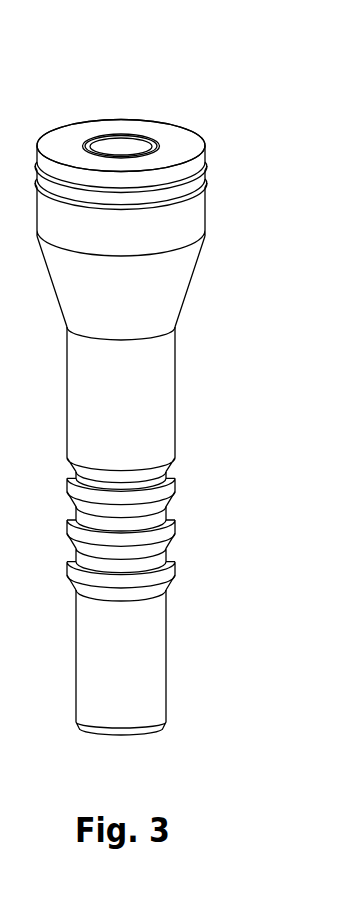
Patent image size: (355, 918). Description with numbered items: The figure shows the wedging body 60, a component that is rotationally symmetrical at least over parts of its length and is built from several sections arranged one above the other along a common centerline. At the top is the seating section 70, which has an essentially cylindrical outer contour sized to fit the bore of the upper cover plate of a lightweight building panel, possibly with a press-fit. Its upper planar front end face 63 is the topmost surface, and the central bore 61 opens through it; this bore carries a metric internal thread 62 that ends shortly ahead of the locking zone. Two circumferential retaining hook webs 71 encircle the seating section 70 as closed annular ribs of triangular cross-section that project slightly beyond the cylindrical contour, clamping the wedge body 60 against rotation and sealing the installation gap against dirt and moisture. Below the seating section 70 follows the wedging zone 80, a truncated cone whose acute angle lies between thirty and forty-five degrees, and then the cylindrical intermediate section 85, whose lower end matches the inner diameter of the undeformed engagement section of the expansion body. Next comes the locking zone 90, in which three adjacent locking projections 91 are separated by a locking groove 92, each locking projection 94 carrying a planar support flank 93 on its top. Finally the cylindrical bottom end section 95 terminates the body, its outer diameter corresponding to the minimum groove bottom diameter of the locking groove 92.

The wedging body 60 is at (172, 125).
The central bore 61 is at (157, 139).
The internal thread 62 is at (157, 148).
The upper planar front end face 63 is at (178, 152).
The retaining hook webs 71 is at (207, 184).
The seating section 70 is at (213, 214).
The wedging zone 80 is at (195, 282).
The intermediate section 85 is at (178, 391).
The support flank 93 is at (171, 483).
The locking projection 94 is at (163, 512).
The locking zone 90 is at (183, 524).
The locking projections 91 is at (181, 538).
The locking groove 92 is at (175, 565).
The bottom end section 95 is at (172, 637).